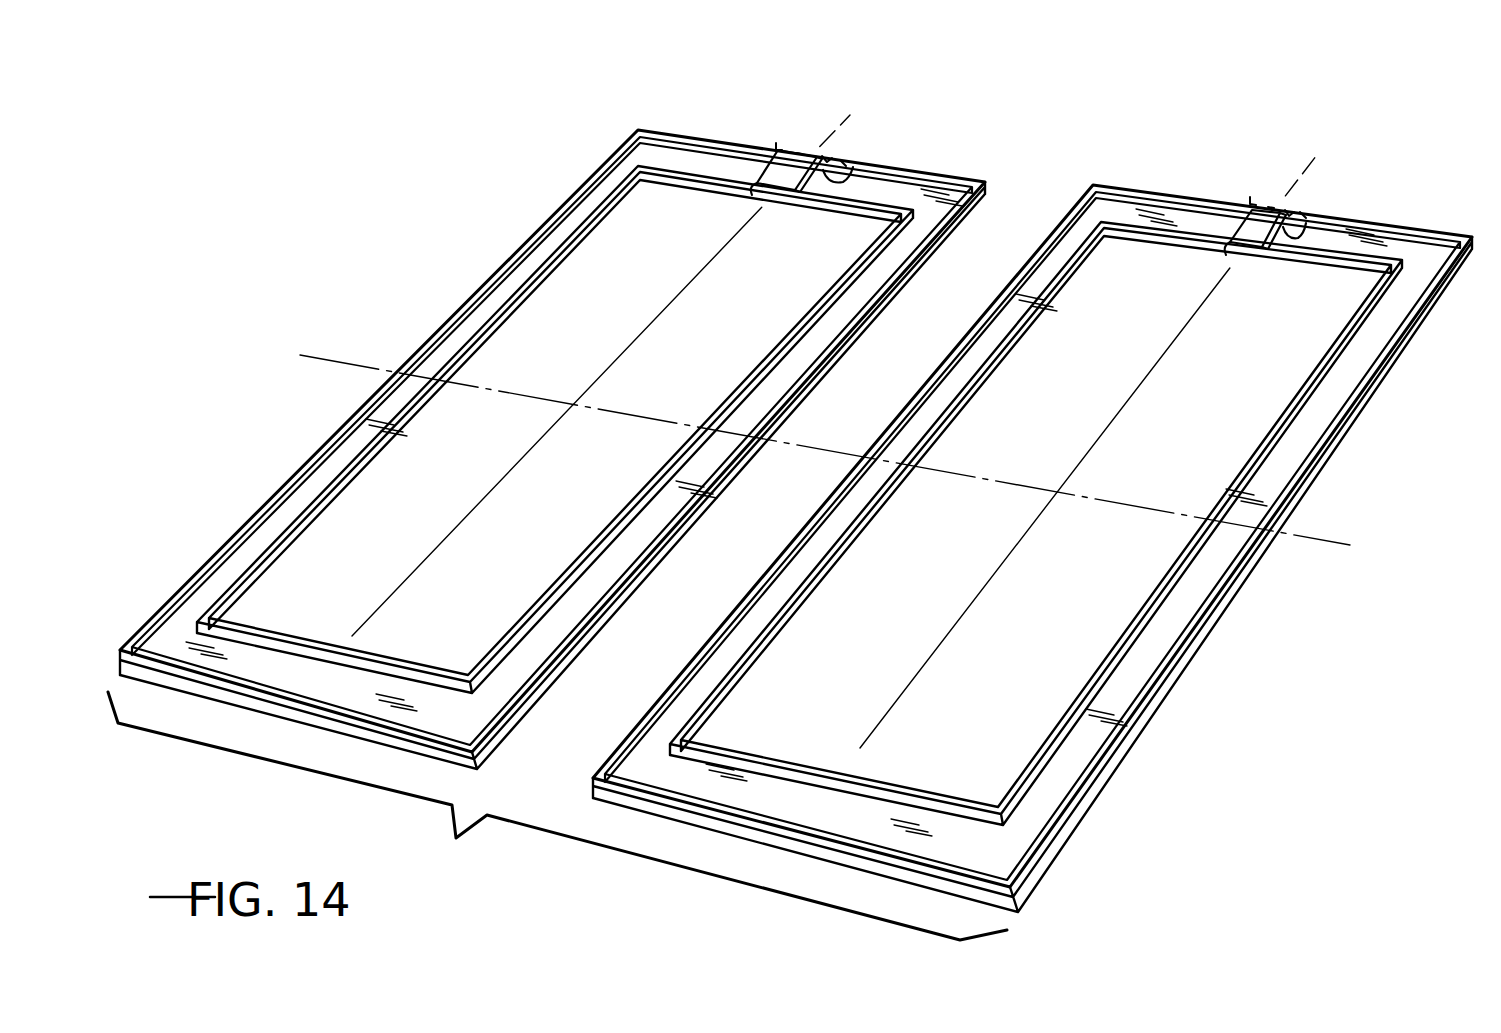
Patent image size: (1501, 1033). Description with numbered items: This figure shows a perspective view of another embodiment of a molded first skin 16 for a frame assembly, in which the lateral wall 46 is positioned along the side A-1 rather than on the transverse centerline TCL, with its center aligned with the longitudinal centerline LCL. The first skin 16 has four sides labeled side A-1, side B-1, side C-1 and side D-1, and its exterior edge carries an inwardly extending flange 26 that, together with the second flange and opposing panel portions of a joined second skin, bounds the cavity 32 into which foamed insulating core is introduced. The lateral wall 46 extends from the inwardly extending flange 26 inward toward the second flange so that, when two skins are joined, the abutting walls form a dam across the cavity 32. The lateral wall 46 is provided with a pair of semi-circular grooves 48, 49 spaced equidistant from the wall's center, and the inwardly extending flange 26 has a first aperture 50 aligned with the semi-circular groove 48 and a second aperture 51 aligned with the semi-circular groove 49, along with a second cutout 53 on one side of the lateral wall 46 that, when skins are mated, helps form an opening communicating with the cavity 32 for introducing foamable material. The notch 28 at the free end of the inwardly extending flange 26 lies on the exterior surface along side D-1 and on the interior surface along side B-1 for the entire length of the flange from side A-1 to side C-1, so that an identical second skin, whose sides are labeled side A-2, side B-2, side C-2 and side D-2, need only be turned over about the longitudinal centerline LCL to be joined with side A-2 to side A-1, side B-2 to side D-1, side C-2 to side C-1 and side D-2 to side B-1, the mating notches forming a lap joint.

The first skin 16 is at (802, 479).
The inwardly extending flange 26 is at (680, 130).
The notch 28 is at (640, 130).
The cavity 32 is at (847, 166).
The lateral wall 46 is at (840, 183).
The semi-circular groove 48 is at (780, 193).
The semi-circular groove 49 is at (760, 198).
The first aperture 50 is at (827, 167).
The second aperture 51 is at (800, 160).
The second cutout 53 is at (780, 147).
The side A-1 is at (1190, 190).
The side A-2 is at (737, 137).
The side B-1 is at (937, 378).
The side B-2 is at (355, 400).
The side C-1 is at (907, 880).
The side C-2 is at (425, 753).
The side D-1 is at (1230, 626).
The side D-2 is at (697, 522).
The transverse centerline TCL is at (540, 390).
The longitudinal centerline LCL is at (603, 380).